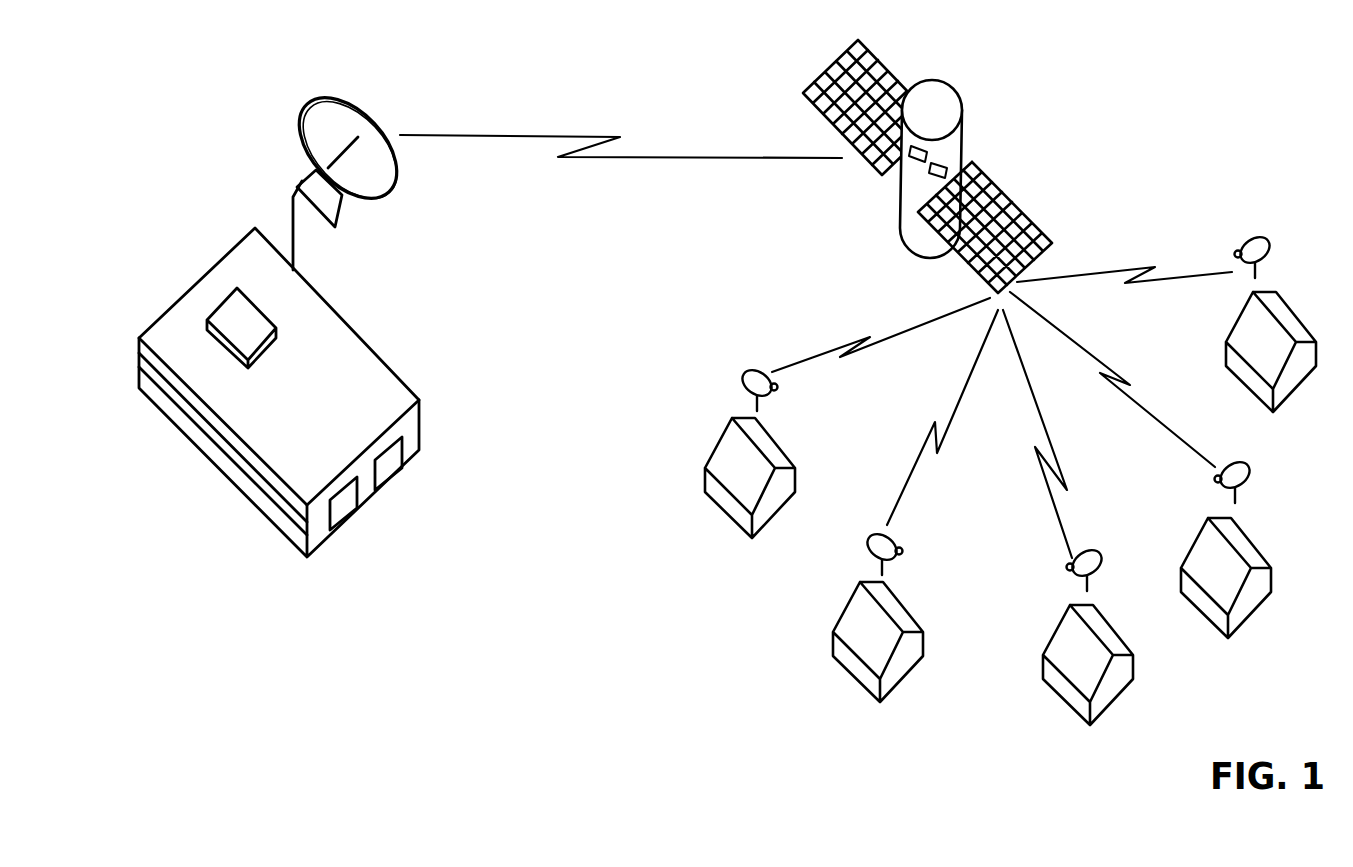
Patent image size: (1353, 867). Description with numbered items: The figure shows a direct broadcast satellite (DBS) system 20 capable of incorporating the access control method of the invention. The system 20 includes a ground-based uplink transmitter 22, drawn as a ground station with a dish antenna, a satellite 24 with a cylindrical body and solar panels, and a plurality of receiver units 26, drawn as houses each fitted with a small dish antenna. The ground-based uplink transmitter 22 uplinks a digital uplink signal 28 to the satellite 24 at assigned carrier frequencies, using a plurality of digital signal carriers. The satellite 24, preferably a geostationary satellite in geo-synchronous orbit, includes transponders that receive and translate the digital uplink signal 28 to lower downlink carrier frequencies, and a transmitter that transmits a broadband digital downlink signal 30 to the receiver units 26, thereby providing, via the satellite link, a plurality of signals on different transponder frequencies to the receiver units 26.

The direct broadcast satellite (DBS) system 20 is at (1062, 136).
The ground-based uplink transmitter 22 is at (241, 211).
The satellite 24 is at (969, 107).
The receiver units 26 is at (806, 728).
The digital uplink signal 28 is at (522, 131).
The broadband digital downlink signal 30 is at (968, 360).